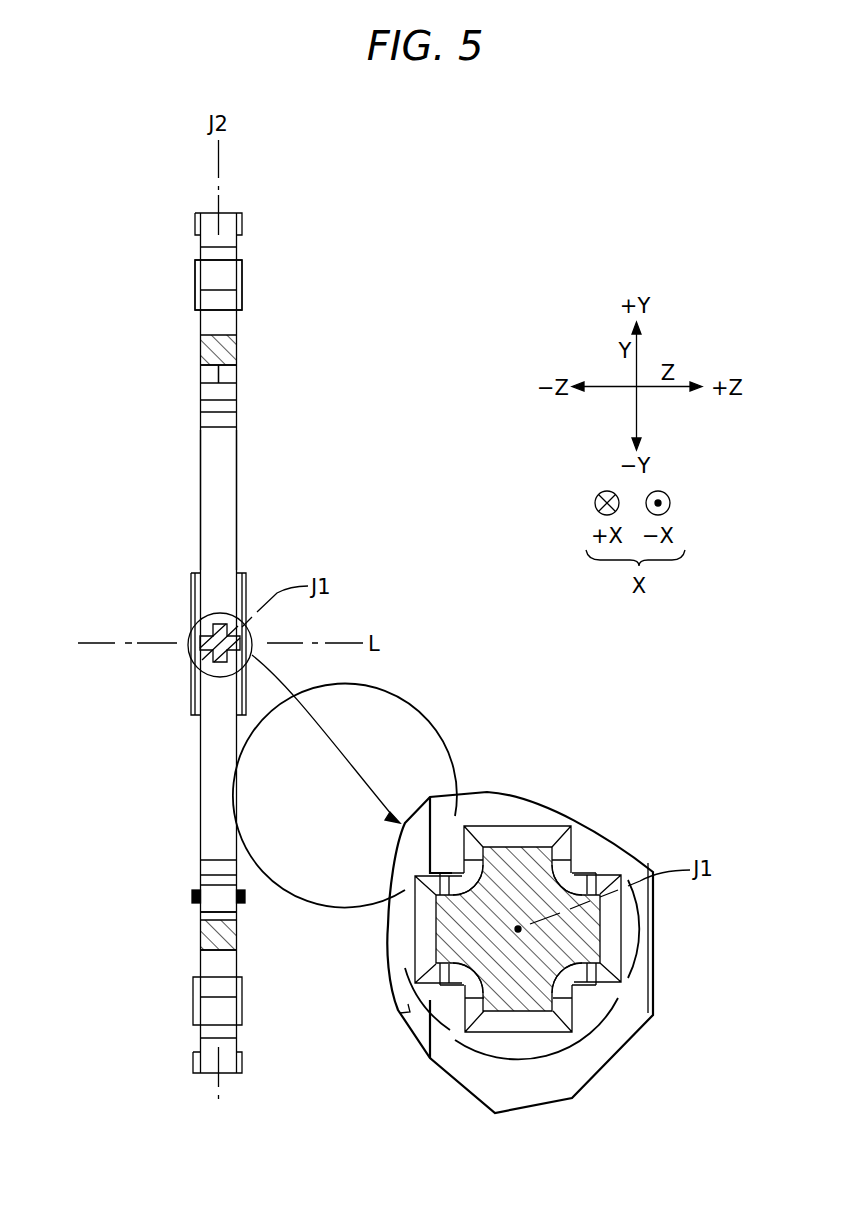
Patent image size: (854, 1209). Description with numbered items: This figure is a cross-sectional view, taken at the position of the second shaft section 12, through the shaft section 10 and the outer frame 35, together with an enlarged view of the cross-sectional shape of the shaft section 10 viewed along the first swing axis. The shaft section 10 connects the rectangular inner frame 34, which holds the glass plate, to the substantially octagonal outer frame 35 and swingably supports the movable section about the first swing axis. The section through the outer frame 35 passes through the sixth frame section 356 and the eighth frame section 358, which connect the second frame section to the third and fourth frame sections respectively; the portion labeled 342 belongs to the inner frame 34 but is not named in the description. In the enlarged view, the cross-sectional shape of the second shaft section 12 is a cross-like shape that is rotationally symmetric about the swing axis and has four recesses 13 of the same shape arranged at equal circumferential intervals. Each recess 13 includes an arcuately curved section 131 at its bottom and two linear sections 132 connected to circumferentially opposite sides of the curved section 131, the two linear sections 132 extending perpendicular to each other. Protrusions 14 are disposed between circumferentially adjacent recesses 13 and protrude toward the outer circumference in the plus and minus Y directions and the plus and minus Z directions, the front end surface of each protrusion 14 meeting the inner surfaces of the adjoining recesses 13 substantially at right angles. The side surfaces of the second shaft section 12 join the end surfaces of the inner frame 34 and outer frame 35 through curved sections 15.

The shaft section 10 is at (425, 821).
The second shaft section 12 is at (213, 663).
The recess 13 is at (516, 937).
The curved section 131 is at (450, 870).
The linear section 132 is at (440, 850).
The protrusion 14 is at (520, 845).
The curved section 15 is at (423, 902).
The inner frame 34 is at (190, 531).
The outer frame 35 is at (190, 319).
The arm body 342 is at (209, 483).
The sixth frame section 356 is at (206, 376).
The eighth frame section 358 is at (208, 918).